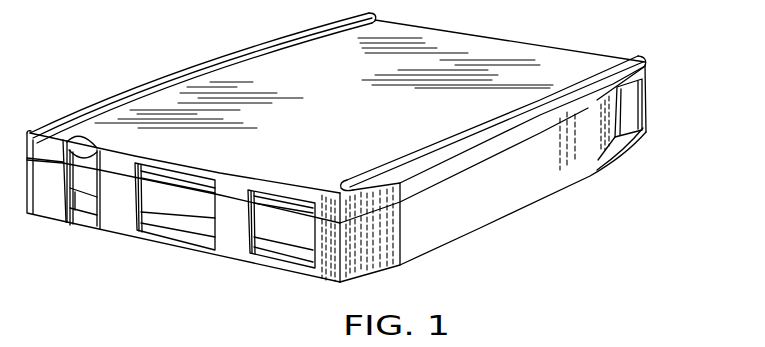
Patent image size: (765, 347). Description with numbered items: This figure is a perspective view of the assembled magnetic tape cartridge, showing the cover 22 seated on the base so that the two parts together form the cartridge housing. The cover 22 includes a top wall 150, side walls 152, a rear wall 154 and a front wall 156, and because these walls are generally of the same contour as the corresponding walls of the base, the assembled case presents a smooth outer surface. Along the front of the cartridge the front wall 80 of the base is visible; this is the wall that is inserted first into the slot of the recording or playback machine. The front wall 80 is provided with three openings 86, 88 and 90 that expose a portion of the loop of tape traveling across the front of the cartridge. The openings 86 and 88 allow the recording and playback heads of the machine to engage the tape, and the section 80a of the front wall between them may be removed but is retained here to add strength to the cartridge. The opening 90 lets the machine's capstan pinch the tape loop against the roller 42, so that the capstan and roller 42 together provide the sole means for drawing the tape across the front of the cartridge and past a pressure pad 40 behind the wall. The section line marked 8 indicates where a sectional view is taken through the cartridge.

The cover 22 is at (531, 35).
The top wall 150 is at (482, 20).
The side walls 152 is at (142, 86).
The rear wall 154 is at (596, 55).
The front wall 156 is at (237, 193).
The pressure pad 40 is at (189, 172).
The roller 42 is at (93, 197).
The opening 90 is at (78, 220).
The front wall 80 is at (122, 210).
The section of the front wall 80a is at (230, 238).
The opening 86 is at (253, 237).
The opening 88 is at (143, 213).
The section line 8- 8 is at (255, 52).